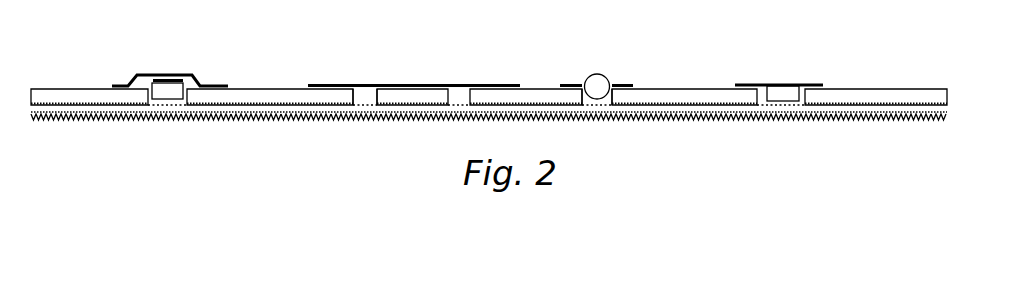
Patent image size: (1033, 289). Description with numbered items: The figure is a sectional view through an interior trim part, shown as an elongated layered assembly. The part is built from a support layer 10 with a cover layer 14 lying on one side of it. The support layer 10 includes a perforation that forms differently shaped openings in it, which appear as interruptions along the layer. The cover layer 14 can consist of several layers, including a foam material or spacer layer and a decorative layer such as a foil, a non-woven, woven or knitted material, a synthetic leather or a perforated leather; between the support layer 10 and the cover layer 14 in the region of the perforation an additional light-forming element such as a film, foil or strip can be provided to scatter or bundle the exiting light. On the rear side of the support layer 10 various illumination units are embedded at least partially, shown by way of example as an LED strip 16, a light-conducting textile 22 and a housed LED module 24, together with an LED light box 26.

The support layer 10 is at (43, 100).
The cover layer 14 is at (65, 120).
The LED strip 16 is at (623, 83).
The light-conducting textile 22 is at (370, 87).
The housed LED module 24 is at (820, 83).
The LED light box 26 is at (200, 77).